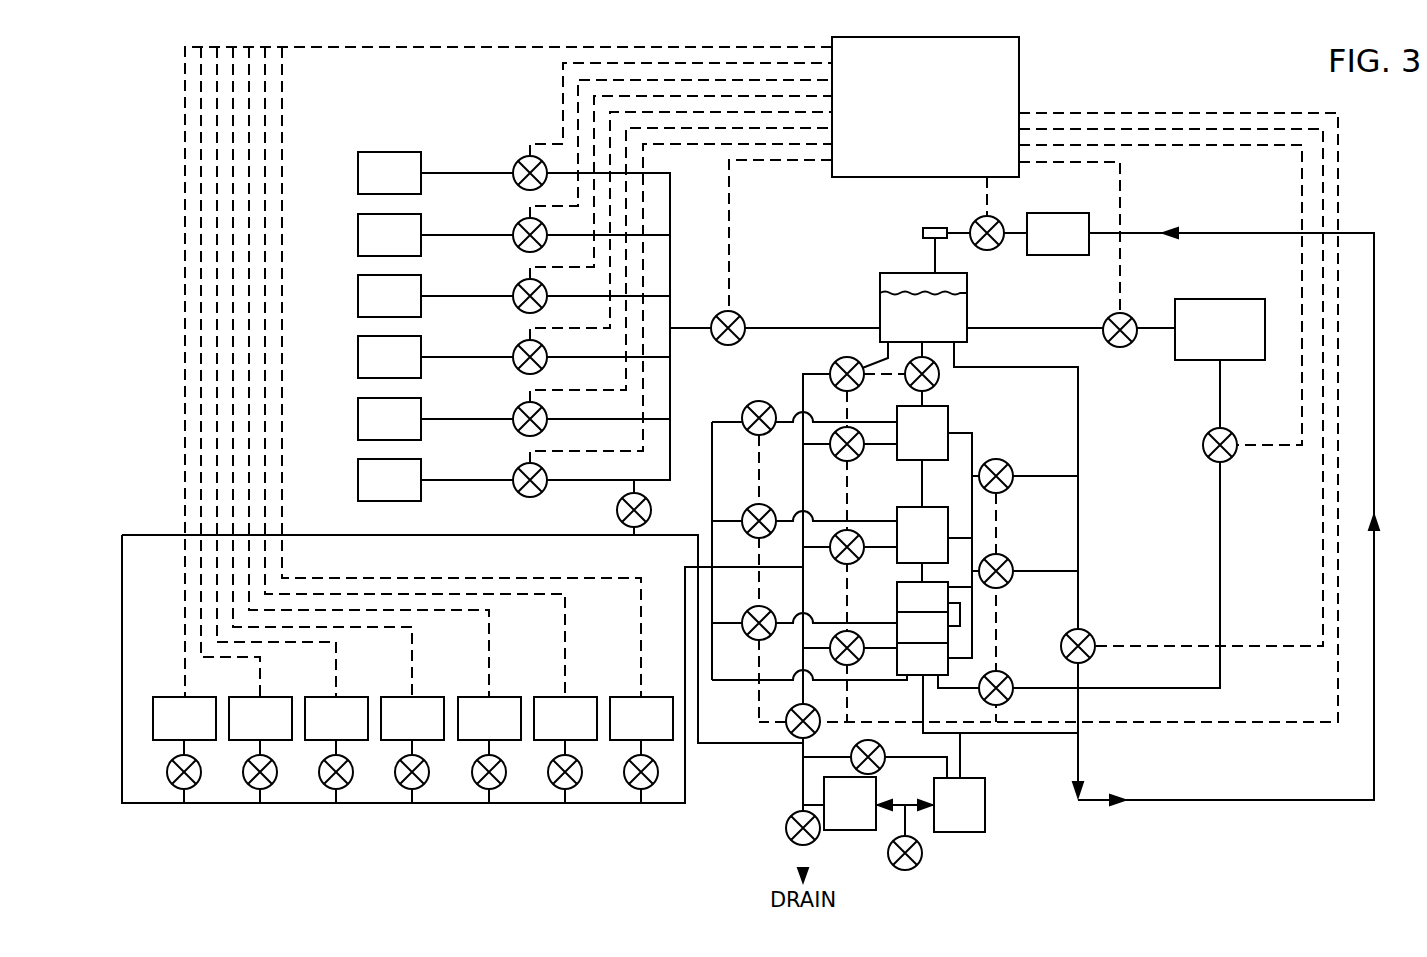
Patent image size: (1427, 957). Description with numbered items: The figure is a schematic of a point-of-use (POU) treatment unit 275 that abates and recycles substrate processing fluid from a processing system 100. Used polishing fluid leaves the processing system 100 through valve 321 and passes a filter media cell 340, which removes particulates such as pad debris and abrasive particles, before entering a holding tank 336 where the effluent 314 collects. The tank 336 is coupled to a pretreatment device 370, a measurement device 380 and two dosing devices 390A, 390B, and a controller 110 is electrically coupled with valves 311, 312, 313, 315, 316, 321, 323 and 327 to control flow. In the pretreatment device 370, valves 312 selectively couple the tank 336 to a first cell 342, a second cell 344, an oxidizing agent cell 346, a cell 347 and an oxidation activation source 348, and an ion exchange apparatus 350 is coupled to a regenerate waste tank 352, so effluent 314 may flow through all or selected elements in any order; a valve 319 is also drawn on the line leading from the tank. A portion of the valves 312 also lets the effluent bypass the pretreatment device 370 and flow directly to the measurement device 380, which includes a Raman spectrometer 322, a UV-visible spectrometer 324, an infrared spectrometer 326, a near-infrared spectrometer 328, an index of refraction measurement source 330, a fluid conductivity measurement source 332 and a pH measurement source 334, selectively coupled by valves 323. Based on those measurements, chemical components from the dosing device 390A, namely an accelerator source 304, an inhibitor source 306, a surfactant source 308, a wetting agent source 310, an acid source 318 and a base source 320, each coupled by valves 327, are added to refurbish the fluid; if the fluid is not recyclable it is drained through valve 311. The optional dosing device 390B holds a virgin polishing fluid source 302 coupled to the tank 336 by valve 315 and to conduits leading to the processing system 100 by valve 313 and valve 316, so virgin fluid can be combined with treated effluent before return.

The POU treatment unit 275 is at (1112, 68).
The controller 110 is at (925, 107).
The processing system 100 is at (1058, 234).
The virgin polishing fluid source 302 is at (1230, 282).
The accelerator source 304 is at (389, 173).
The inhibitor source 306 is at (389, 235).
The surfactant source 308 is at (389, 296).
The wetting agent source 310 is at (389, 357).
The valve 311 is at (790, 818).
The valves 312 is at (858, 362).
The valve 313 is at (1203, 444).
The effluent 314 is at (878, 299).
The valve 315 is at (1124, 347).
The valve 316 is at (1090, 634).
The acid source 318 is at (389, 419).
The valve 319 is at (726, 346).
The base source 320 is at (389, 480).
The valve 321 is at (975, 222).
The Raman spectrometer 322 is at (184, 718).
The valves 323 is at (177, 787).
The UV-visible spectrometer 324 is at (260, 718).
The infrared spectrometer 326 is at (336, 718).
The valves 327 is at (520, 185).
The near-infrared spectrometer 328 is at (412, 718).
The index of refraction measurement source 330 is at (489, 718).
The fluid conductivity measurement source 332 is at (565, 718).
The pH measurement source 334 is at (641, 718).
The holding tank 336 is at (880, 282).
The filter media cell 340 is at (923, 233).
The first cell 342 is at (922, 433).
The second cell 344 is at (922, 535).
The oxidizing agent cell 346 is at (922, 597).
The sensor 347 is at (922, 627).
The oxidation activation source 348 is at (922, 659).
The ion exchange apparatus 350 is at (959, 805).
The regenerate waste tank 352 is at (850, 803).
The pretreatment device 370 is at (980, 812).
The measurement device 380 is at (462, 694).
The dosing device 390A is at (452, 156).
The dosing device 390B is at (1232, 311).